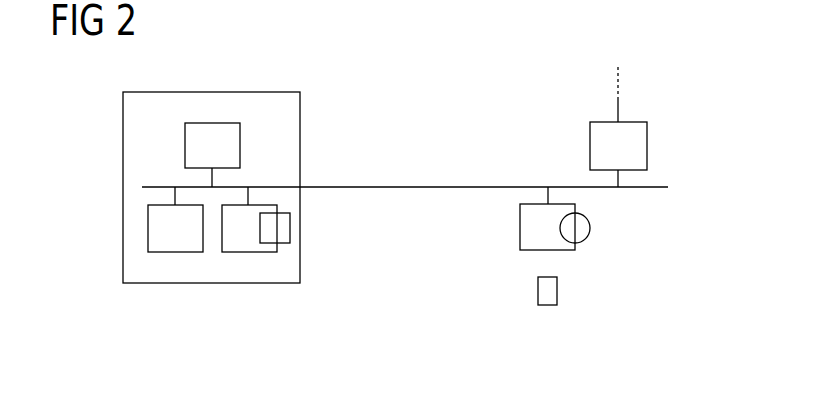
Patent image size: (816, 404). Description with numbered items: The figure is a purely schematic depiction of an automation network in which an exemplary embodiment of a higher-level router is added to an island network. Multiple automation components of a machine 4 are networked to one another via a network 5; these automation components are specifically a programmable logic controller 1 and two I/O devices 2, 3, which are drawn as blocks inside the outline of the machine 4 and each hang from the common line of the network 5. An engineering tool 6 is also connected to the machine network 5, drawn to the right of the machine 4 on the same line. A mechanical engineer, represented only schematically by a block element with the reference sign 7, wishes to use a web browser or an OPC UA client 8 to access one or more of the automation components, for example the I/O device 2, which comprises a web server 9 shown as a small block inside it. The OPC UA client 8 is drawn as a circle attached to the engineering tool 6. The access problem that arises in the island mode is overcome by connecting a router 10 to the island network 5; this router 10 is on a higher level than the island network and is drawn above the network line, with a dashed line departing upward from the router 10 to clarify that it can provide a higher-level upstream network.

The programmable logic controller 1 is at (217, 123).
The I/O device 2 is at (247, 252).
The I/O device 3 is at (172, 252).
The machine 4 is at (278, 91).
The network 5 is at (433, 187).
The engineering tool 6 is at (520, 228).
The mechanical engineer 7 is at (557, 290).
The OPC UA client 8 is at (590, 228).
The web server 9 is at (290, 228).
The router 10 is at (647, 145).